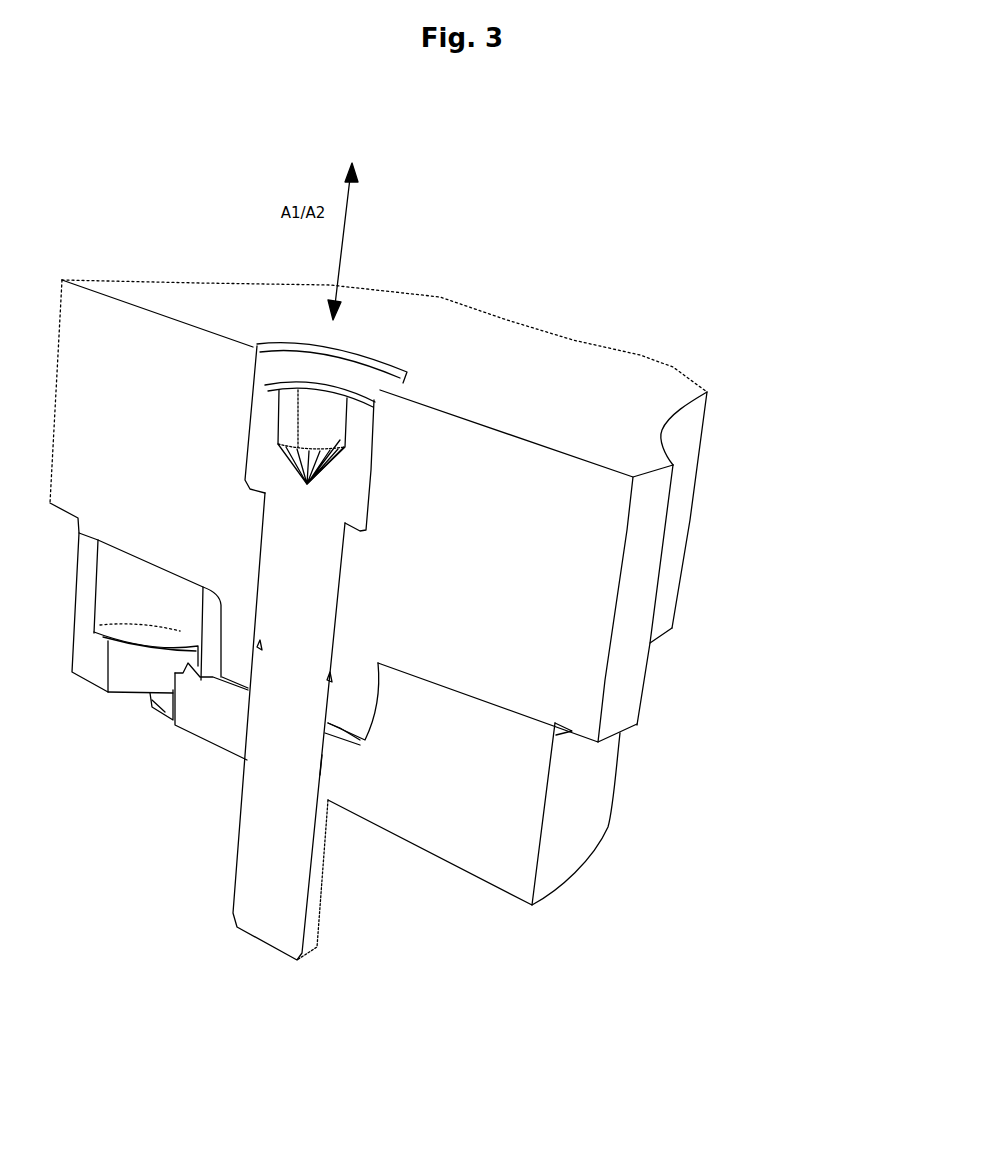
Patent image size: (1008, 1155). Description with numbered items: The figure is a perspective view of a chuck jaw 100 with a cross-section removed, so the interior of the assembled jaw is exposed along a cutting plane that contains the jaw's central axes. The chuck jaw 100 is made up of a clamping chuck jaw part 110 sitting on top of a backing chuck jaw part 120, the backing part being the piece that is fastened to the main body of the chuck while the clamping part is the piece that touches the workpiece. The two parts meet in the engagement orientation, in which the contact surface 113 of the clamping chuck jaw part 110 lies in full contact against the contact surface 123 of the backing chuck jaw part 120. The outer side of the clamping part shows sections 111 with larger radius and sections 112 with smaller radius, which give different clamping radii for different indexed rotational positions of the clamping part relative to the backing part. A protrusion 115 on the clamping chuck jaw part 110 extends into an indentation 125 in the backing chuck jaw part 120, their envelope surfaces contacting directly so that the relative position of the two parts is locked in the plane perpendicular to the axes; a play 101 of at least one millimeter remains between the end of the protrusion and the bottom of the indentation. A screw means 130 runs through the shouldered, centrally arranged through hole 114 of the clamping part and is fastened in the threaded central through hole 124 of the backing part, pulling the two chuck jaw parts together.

The chuck jaw 100 is at (770, 370).
The clamping chuck jaw part 110 is at (688, 508).
The sections with larger radius 111 is at (635, 685).
The sections with smaller radius 112 is at (688, 433).
The contact surface 113 is at (607, 740).
The through hole 114 is at (385, 407).
The protrusion 115 is at (312, 665).
The backing chuck jaw part 120 is at (620, 790).
The contact surface 123 is at (473, 700).
The threaded central through hole 124 is at (320, 762).
The indentation 125 is at (247, 688).
The screw means 130 is at (358, 397).
The play 101 is at (360, 740).